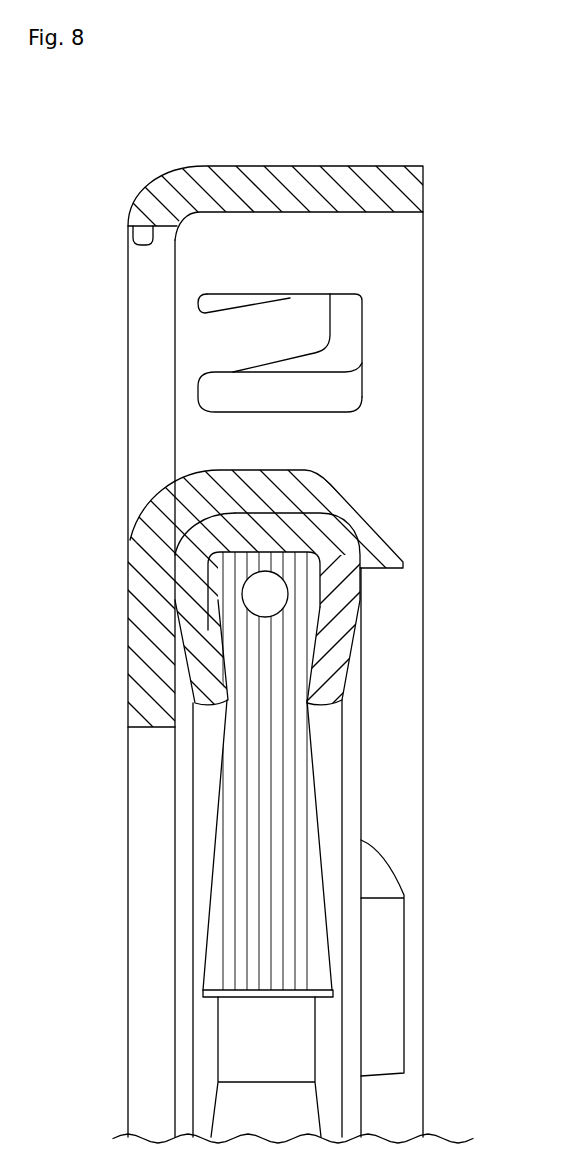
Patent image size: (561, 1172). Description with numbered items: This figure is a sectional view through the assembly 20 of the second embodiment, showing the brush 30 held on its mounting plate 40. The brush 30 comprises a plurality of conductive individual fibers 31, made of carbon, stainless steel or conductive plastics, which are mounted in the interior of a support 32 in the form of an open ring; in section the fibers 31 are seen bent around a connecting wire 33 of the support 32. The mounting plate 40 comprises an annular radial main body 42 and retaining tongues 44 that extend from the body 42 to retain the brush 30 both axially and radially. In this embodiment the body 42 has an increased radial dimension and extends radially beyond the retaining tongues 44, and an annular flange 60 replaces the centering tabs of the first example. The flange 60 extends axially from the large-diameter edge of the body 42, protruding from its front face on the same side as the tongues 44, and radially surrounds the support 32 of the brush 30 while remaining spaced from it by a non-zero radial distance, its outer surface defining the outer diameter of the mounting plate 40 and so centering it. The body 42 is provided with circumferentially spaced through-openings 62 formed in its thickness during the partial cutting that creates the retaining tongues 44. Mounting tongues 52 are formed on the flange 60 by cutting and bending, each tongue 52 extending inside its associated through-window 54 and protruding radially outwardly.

The assembly 20 is at (448, 114).
The mounting plate 40 is at (446, 156).
The annular flange 60 is at (291, 186).
The through-openings 62 is at (130, 239).
The mounting tongues 52 is at (305, 319).
The window 54 is at (305, 397).
The retaining tongues 44 is at (288, 490).
The main body 42 is at (135, 616).
The support member 32 is at (175, 543).
The connecting wire 33 is at (273, 592).
The brush 30 is at (275, 844).
The conductive fibers 31 is at (248, 847).